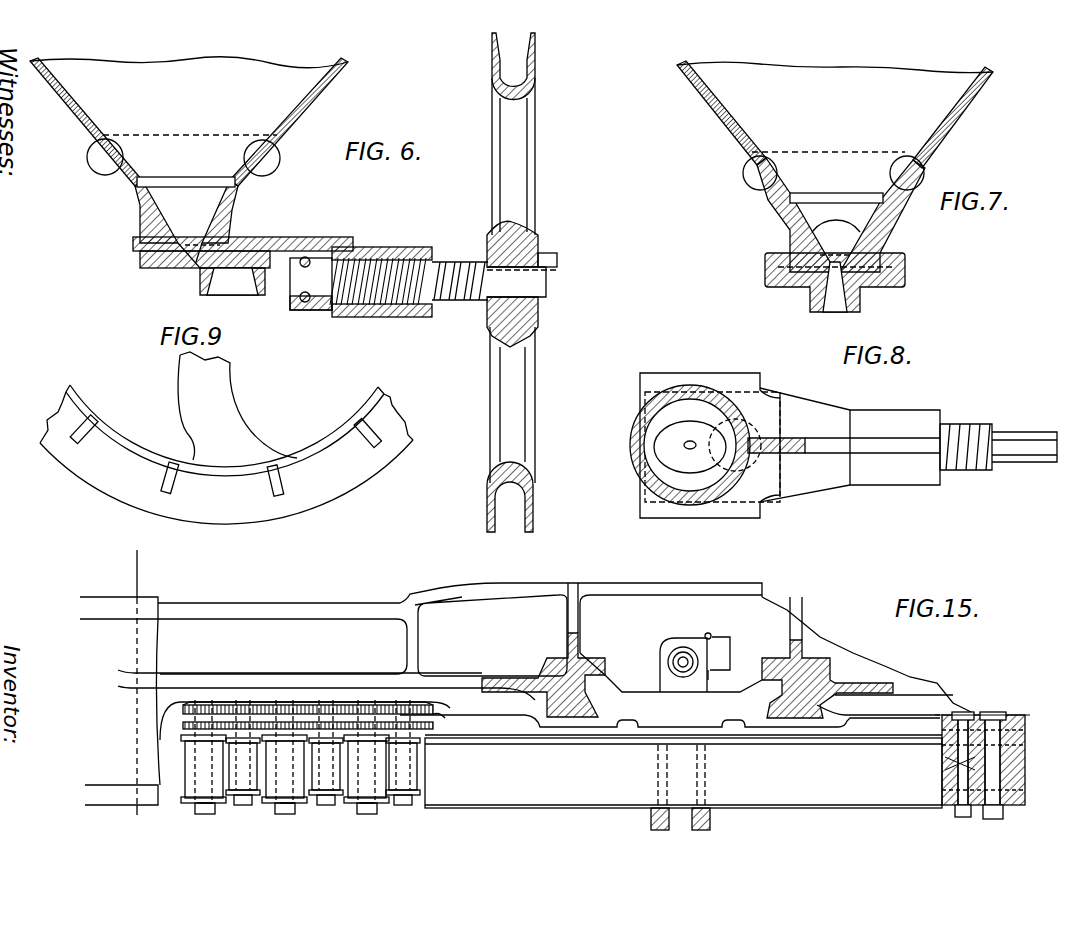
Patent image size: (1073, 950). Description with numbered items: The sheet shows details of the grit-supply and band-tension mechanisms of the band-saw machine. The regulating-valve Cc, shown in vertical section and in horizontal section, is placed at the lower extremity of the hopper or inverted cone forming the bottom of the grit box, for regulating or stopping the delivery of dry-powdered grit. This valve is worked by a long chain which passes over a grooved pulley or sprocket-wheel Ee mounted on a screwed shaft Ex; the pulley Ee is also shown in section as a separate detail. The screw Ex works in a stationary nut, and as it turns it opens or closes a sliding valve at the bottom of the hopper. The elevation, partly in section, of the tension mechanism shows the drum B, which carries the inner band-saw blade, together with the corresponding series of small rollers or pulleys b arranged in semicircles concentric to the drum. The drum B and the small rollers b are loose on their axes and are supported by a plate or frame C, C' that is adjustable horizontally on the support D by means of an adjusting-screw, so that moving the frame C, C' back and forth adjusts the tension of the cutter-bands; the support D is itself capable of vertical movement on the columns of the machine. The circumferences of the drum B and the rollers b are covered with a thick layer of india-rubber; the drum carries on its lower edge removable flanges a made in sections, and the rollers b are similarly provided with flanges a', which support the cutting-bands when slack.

In FIG. 6, the regulating-valve Cc is at (189, 150).
In FIG. 7, the regulating-valve Cc is at (835, 166).
In FIG. 8, the regulating-valve Cc is at (695, 445).
In FIG. 6, the grooved pulley or sprocket-wheel Ee is at (522, 282).
In FIG. 9, the grooved pulley or sprocket-wheel Ee is at (226, 438).
In FIG. 6, the screwed shaft Ex is at (443, 275).
In FIG. 8, the screwed shaft Ex is at (902, 445).
In FIG. 15, the drum B is at (683, 784).
In FIG. 15, the plate or frame C is at (543, 683).
In FIG. 15, the plate or frame C' is at (827, 687).
In FIG. 15, the support D is at (695, 656).
In FIG. 15, the removable flanges a is at (979, 771).
In FIG. 15, the flanges a' is at (286, 817).
In FIG. 15, the small rollers or pulleys b is at (300, 757).